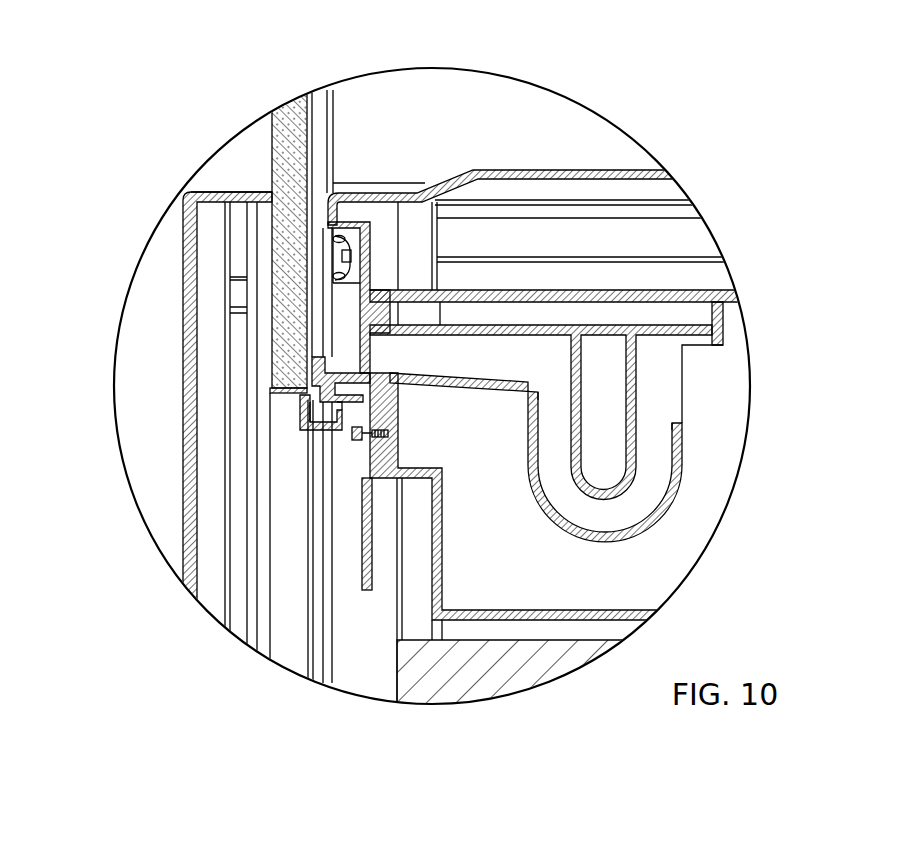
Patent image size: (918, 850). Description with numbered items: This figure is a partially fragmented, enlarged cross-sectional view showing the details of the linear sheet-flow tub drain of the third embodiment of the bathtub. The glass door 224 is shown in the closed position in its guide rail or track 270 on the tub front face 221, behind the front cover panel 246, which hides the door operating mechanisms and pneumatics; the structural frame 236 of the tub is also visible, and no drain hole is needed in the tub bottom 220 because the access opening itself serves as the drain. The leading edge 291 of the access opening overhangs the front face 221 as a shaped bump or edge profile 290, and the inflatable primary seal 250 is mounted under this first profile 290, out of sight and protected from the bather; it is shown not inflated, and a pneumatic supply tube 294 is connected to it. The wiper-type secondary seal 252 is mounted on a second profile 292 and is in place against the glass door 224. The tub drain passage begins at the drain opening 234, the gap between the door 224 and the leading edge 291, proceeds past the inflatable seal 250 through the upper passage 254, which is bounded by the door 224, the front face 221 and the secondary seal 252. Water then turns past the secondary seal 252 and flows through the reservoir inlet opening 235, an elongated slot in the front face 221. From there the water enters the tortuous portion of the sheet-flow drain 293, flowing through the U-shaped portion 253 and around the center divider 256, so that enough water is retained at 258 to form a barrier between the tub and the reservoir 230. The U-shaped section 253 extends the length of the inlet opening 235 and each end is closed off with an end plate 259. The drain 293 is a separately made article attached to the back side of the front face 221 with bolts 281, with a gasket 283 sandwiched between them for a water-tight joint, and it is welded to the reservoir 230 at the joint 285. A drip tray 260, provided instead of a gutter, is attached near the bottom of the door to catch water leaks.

The tub bottom 220 is at (605, 163).
The front face 221 is at (362, 562).
The door 224 is at (277, 108).
The reservoir 230 is at (642, 618).
The tub drain opening 234 is at (320, 193).
The reservoir inlet opening 235 is at (388, 353).
The structural frame 236 is at (670, 215).
The front cover panel 246 is at (190, 420).
The primary seal 250 is at (340, 220).
The secondary seal 252 is at (312, 398).
The U-shaped portion 253 is at (684, 483).
The upper drain passage 254 is at (320, 275).
The center divider 256 is at (638, 402).
The retained water location 258 is at (642, 507).
The end plate 259 is at (684, 358).
The drip tray 260 is at (307, 430).
The guide rail 270 is at (288, 627).
The bolts 281 is at (343, 420).
The gasket 283 is at (355, 442).
The joint 285 is at (714, 289).
The edge profile 290 is at (250, 191).
The leading edge 291 is at (363, 240).
The second profile 292 is at (390, 434).
The sheet-flow drain 293 is at (568, 320).
The pneumatic supply tube 294 is at (430, 184).